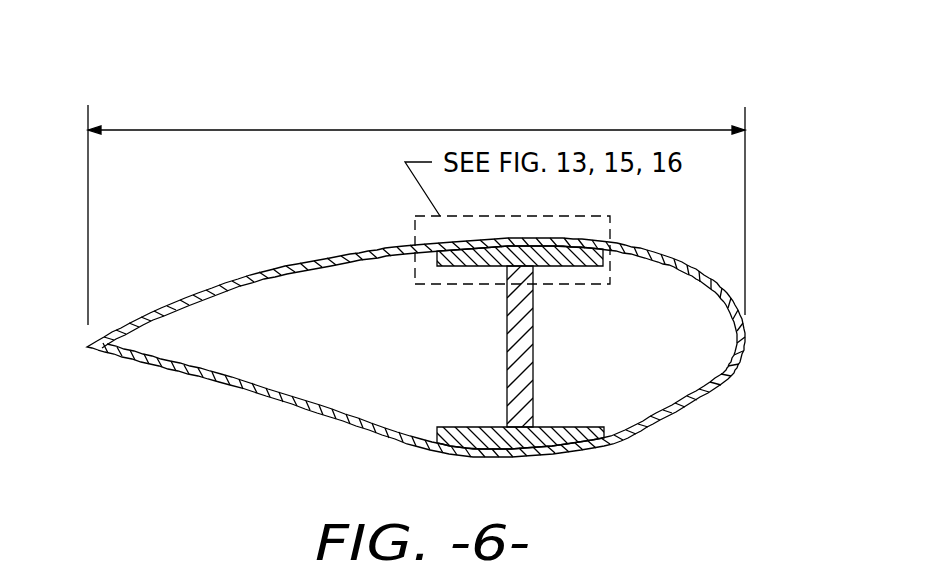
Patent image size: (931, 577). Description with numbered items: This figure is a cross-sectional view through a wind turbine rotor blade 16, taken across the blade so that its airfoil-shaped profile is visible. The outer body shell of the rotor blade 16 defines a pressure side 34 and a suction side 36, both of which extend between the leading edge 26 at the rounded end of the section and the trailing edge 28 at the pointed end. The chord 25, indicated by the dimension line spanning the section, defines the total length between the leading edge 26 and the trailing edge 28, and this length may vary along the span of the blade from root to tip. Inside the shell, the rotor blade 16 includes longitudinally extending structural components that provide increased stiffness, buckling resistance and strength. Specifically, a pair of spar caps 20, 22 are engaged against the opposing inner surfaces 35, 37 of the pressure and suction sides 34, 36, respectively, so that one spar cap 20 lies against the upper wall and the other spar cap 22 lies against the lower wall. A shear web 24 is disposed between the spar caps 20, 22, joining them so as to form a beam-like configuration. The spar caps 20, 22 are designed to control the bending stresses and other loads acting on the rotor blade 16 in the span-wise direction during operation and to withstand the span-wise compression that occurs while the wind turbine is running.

The rotor blade 16 is at (413, 256).
The spar cap 20 is at (565, 248).
The spar cap 22 is at (560, 437).
The shear web 24 is at (533, 390).
The chord 25 is at (305, 130).
The leading edge 26 is at (747, 335).
The trailing edge 28 is at (85, 347).
The pressure side 34 is at (325, 422).
The inner surface 35 is at (245, 383).
The suction side 36 is at (335, 257).
The inner surface 37 is at (305, 272).